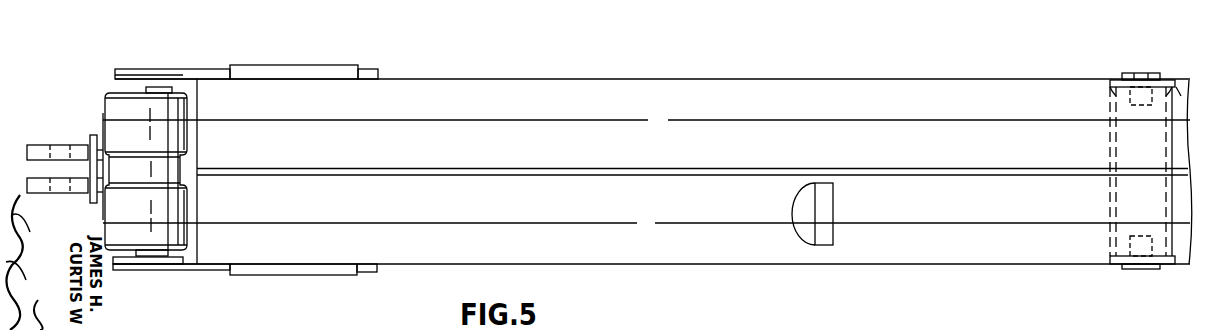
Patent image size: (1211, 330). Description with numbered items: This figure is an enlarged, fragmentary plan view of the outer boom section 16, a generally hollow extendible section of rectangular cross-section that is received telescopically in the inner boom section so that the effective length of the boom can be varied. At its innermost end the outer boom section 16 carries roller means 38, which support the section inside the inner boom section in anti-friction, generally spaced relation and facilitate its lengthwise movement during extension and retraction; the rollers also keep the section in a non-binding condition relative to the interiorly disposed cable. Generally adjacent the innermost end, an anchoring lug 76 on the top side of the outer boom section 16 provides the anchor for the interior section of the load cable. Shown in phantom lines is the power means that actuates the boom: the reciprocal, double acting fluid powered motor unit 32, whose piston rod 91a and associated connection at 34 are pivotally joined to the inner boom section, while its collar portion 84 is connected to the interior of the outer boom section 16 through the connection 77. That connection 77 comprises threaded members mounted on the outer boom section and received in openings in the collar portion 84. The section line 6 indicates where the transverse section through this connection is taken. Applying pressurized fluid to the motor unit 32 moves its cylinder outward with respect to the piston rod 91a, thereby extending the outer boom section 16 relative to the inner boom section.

The outer boom section 16 is at (617, 80).
The reciprocal fluid powered motor unit 32 is at (753, 116).
The pivotal connection 34 is at (57, 143).
The roller means 38 is at (162, 98).
The piston rod 91a is at (97, 212).
The anchoring lug 76 is at (810, 232).
The connection 77 is at (1149, 73).
The collar portion 84 is at (1190, 92).
The section line 6- 6 is at (1140, 65).